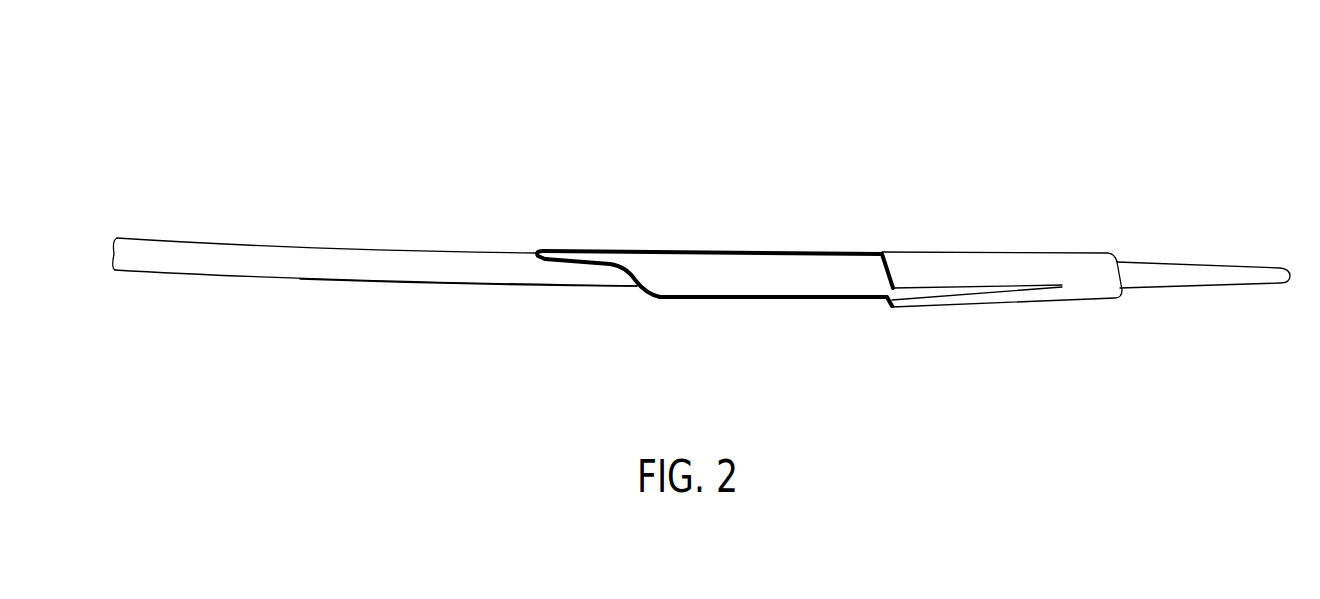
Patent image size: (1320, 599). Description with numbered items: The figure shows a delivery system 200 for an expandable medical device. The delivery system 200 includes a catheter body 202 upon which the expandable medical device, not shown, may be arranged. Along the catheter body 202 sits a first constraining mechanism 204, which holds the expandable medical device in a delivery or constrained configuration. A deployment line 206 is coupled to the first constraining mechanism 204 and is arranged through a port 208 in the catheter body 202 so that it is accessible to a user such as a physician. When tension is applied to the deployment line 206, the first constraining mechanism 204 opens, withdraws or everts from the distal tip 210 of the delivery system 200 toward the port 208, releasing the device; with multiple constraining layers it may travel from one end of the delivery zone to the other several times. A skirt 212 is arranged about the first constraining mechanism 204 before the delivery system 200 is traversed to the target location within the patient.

The delivery system 200 is at (245, 113).
The catheter body 202 is at (167, 240).
The first constraining mechanism 204 is at (817, 287).
The deployment line 206 is at (587, 253).
The port 208 is at (517, 272).
The distal tip 210 is at (1235, 263).
The skirt 212 is at (983, 252).